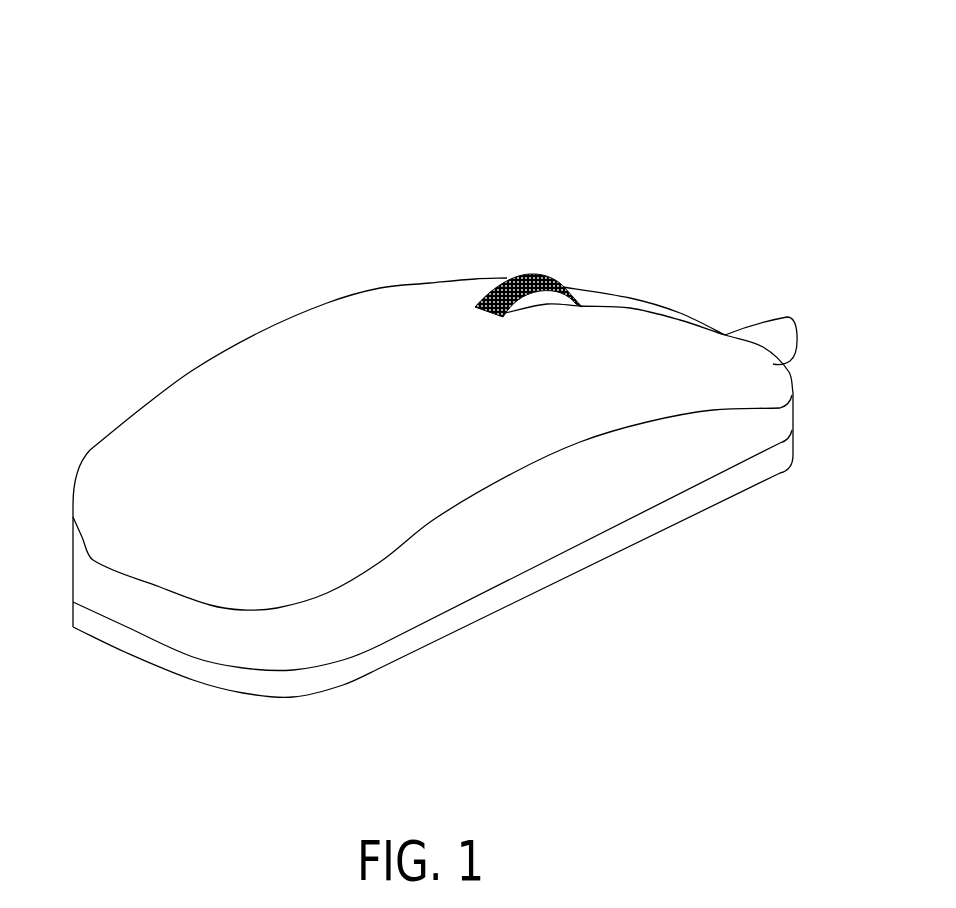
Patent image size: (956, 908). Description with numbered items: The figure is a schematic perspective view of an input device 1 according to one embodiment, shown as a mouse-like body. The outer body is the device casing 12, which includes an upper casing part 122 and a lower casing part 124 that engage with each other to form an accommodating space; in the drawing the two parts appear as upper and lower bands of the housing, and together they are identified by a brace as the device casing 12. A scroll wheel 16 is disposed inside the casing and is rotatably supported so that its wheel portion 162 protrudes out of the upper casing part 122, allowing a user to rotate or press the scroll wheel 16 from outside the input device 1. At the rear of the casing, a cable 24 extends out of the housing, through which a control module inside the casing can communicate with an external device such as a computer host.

The input device 1 is at (652, 92).
The device casing 12 is at (637, 670).
The upper casing part 122 is at (483, 557).
The lower casing part 124 is at (607, 555).
The scroll wheel 16 is at (517, 250).
The wheel portion 162 is at (520, 273).
The cable 24 is at (770, 333).